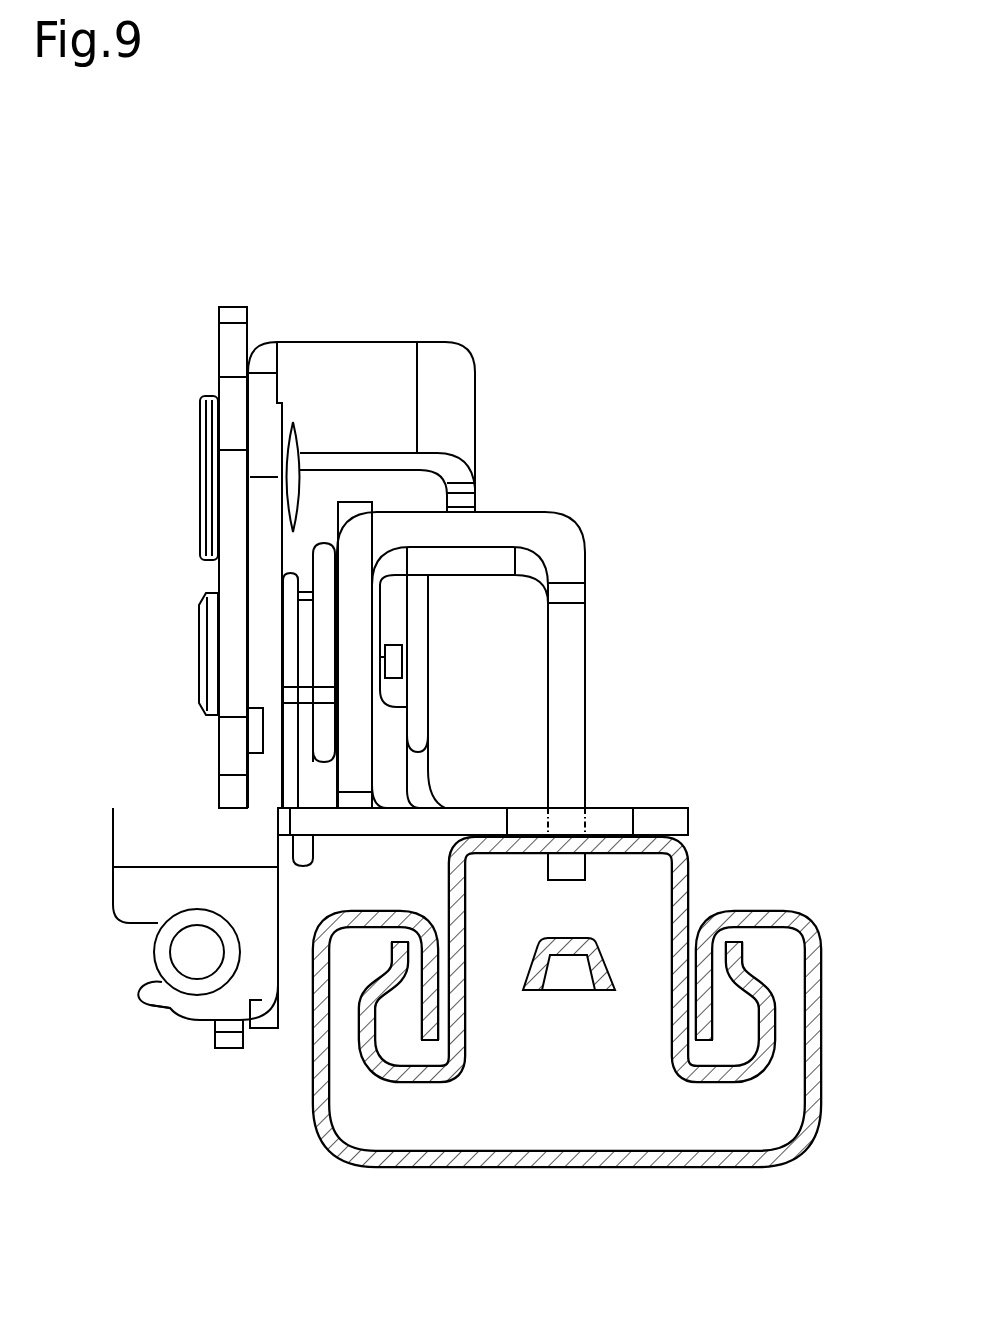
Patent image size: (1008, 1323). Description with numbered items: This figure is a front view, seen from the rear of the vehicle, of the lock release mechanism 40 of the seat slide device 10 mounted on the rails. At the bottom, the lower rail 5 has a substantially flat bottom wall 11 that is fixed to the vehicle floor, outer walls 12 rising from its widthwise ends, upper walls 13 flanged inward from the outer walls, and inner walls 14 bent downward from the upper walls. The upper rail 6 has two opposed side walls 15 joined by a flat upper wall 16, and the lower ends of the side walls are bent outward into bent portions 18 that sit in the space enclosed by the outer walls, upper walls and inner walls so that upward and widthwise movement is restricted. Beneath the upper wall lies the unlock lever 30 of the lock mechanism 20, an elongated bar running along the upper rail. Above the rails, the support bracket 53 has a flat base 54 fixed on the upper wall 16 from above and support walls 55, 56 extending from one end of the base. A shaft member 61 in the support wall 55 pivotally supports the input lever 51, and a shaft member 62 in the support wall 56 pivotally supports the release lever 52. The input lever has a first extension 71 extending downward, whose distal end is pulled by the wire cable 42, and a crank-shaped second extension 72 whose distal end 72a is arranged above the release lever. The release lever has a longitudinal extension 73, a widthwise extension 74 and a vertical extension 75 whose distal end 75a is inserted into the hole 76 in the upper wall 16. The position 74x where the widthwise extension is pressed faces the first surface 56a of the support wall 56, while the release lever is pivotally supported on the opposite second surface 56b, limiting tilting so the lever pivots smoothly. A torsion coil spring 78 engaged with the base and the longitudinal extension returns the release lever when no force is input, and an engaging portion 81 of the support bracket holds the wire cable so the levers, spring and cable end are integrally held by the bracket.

The seat slide device 10 is at (469, 698).
The lock release mechanism 40 is at (469, 698).
The lower rail 5 is at (573, 1019).
The upper rail 6 is at (642, 831).
The bottom wall 11 is at (533, 1168).
The outer wall 12 is at (320, 1048).
The upper wall 13 is at (375, 912).
The inner wall 14 is at (428, 1025).
The side wall 15 is at (455, 880).
The upper wall 16 is at (633, 840).
The bent portion 18 is at (372, 1065).
The lock mechanism 20 is at (570, 937).
The unlock lever 30 is at (594, 937).
The wire cable 42 is at (156, 950).
The input lever 51 is at (413, 408).
The release lever 52 is at (494, 692).
The support bracket 53 is at (166, 916).
The base 54 is at (483, 809).
The support wall 55 is at (258, 372).
The support wall 56 is at (454, 677).
The first surface 56a is at (393, 653).
The second surface 56b is at (362, 725).
The shaft member 61 is at (200, 470).
The shaft member 62 is at (200, 652).
The first extension 71 is at (232, 748).
The second extension 72 is at (370, 342).
The distal end 72a is at (463, 503).
The longitudinal extension 73 is at (360, 635).
The widthwise extension 74 is at (455, 670).
The position 74x is at (464, 677).
The vertical extension 75 is at (578, 747).
The distal end 75a is at (563, 875).
The hole 76 is at (548, 838).
The torsion coil spring 78 is at (300, 775).
The engaging portion 81 is at (158, 1004).